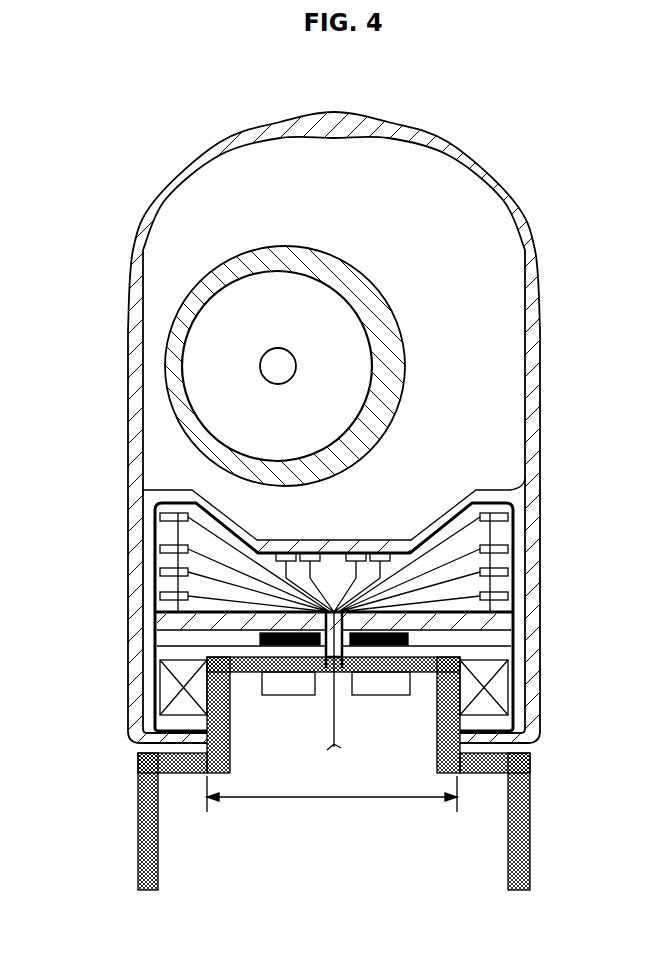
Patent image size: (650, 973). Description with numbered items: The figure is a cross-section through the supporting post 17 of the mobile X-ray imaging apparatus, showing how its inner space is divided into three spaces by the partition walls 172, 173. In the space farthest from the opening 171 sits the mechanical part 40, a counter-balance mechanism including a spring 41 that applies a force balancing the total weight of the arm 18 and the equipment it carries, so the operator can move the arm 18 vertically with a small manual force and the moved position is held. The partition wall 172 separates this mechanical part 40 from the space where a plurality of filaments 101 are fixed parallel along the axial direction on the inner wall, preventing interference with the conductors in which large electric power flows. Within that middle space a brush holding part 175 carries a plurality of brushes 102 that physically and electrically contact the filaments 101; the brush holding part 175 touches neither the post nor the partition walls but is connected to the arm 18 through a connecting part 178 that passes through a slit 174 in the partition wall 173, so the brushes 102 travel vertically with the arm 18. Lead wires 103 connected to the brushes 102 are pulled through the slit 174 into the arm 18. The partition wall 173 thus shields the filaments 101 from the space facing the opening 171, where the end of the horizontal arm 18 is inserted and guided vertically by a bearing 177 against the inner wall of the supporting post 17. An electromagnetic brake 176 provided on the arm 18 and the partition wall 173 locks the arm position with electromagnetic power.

The supporting post 17 is at (541, 318).
The arm 18 is at (531, 870).
The mechanical part 40 is at (387, 263).
The spring 41 is at (395, 326).
The filaments 101 is at (215, 535).
The brushes 102 is at (160, 515).
The lead wires 103 is at (205, 505).
The opening 171 is at (337, 798).
The partition wall 172 is at (453, 489).
The partition wall 173 is at (515, 633).
The slit 174 is at (343, 670).
The brush holding part 175 is at (474, 490).
The electromagnetic brake 176 is at (262, 640).
The bearing 177 is at (512, 686).
The connecting part 178 is at (352, 684).